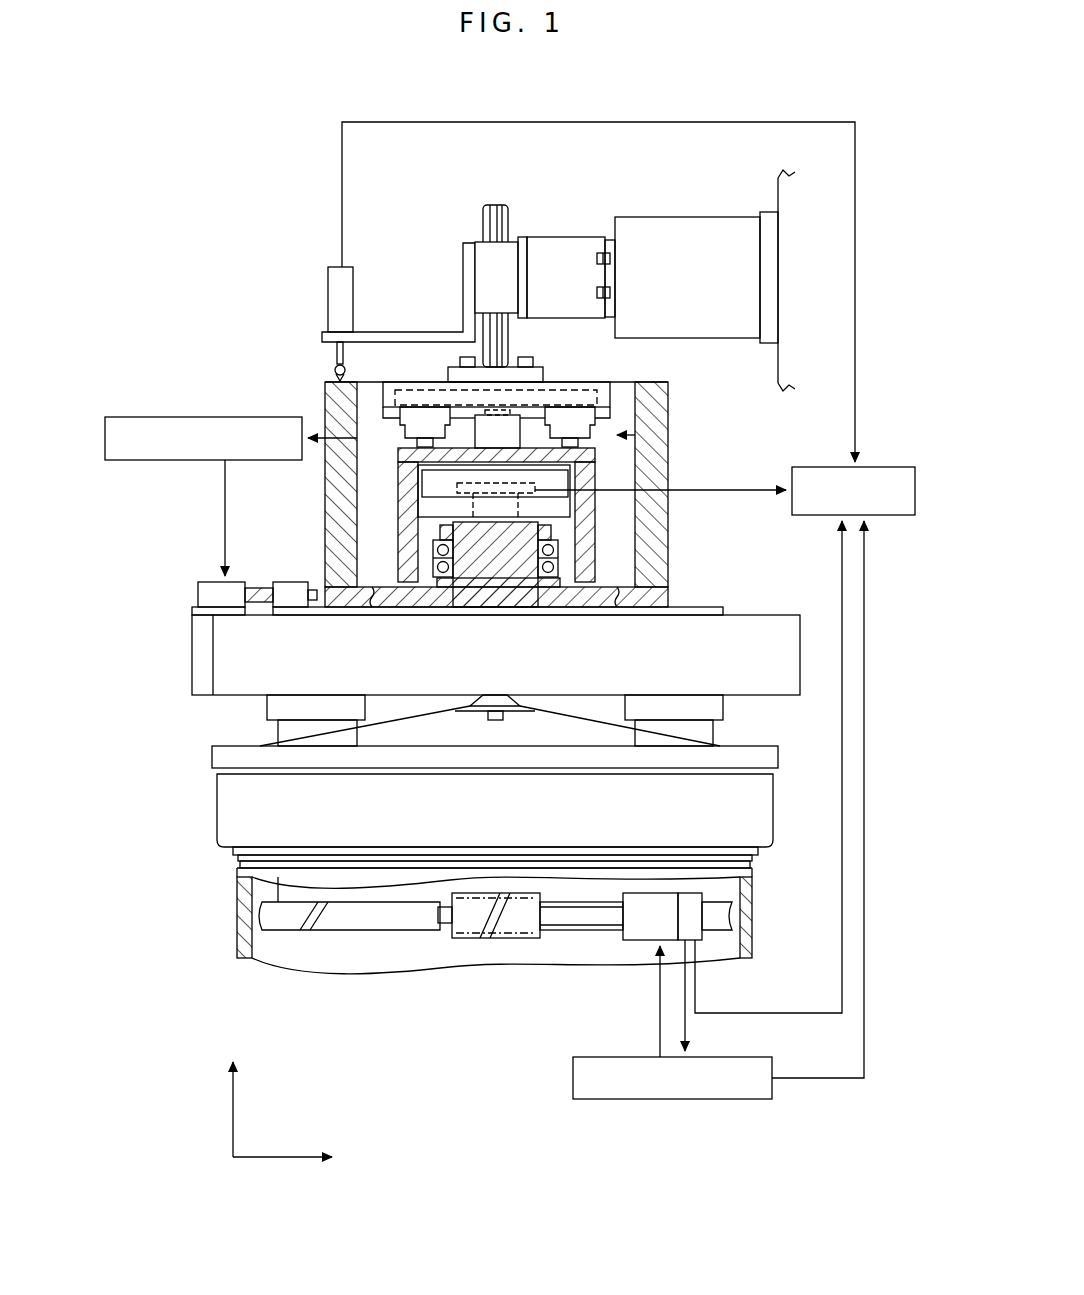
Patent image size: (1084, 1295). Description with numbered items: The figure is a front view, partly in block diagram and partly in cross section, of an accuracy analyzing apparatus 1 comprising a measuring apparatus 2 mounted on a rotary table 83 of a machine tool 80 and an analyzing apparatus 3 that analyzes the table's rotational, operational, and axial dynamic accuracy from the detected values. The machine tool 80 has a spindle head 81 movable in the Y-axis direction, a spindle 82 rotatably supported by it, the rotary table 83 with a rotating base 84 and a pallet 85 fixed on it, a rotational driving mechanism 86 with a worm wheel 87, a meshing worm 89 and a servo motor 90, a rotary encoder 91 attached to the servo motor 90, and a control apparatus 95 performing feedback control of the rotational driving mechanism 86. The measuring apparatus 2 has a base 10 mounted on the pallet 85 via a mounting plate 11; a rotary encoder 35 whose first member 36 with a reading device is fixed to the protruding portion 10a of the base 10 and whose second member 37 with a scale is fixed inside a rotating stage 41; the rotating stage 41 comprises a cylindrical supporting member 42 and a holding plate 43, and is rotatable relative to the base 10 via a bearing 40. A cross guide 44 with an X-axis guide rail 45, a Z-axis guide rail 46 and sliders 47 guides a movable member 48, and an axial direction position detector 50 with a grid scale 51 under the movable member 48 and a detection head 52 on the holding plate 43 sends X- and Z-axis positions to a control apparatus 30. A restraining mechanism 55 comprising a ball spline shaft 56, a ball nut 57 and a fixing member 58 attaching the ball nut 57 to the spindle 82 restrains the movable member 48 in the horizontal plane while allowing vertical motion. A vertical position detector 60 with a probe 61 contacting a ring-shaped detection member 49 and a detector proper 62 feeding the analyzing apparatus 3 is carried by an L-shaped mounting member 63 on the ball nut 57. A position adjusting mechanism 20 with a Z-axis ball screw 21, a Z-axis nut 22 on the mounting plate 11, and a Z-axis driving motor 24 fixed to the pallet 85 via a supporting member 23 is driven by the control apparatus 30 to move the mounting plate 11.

The accuracy analyzing apparatus 1 is at (303, 197).
The measuring apparatus 2 is at (408, 270).
The analyzing apparatus 3 is at (878, 462).
The base 10 is at (560, 615).
The protruding portion 10a is at (438, 532).
The mounting plate 11 is at (530, 612).
The position adjusting mechanism 20 is at (268, 578).
The Z-axis ball screw 21 is at (262, 608).
The Z-axis nut 22 is at (290, 608).
The supporting member 23 is at (225, 620).
The Z-axis driving motor 24 is at (220, 582).
The control apparatus 30 is at (212, 415).
The rotary encoder 35 is at (718, 517).
The first member 36 is at (555, 509).
The second member 37 is at (555, 492).
The bearing 40 is at (440, 595).
The rotating stage 41 is at (292, 462).
The supporting member 42 is at (405, 510).
The holding plate 43 is at (398, 460).
The cross guide 44 is at (650, 439).
The X-axis guide rail 45 is at (575, 438).
The Z-axis guide rail 46 is at (605, 408).
The sliders 47 is at (590, 423).
The movable member 48 is at (433, 382).
The detection member 49 is at (335, 400).
The axial direction position detector 50 is at (600, 352).
The grid scale 51 is at (583, 388).
The detection head 52 is at (516, 432).
The restraining mechanism 55 is at (518, 206).
The ball spline shaft 56 is at (483, 216).
The ball nut 57 is at (480, 254).
The fixing member 58 is at (578, 240).
The vertical position detector 60 is at (313, 260).
The probe 61 is at (334, 370).
The detector proper 62 is at (328, 301).
The L-shaped mounting member 63 is at (388, 334).
The machine tool 80 is at (401, 1012).
The spindle head 81 is at (778, 192).
The spindle 82 is at (666, 220).
The rotary table 83 is at (768, 866).
The rotating base 84 is at (773, 818).
The pallet 85 is at (773, 690).
The rotational driving mechanism 86 is at (485, 955).
The worm wheel 87 is at (345, 927).
The worm 89 is at (508, 932).
The servo motor 90 is at (635, 937).
The rotary encoder 91 is at (695, 942).
The control apparatus 95 is at (573, 1082).